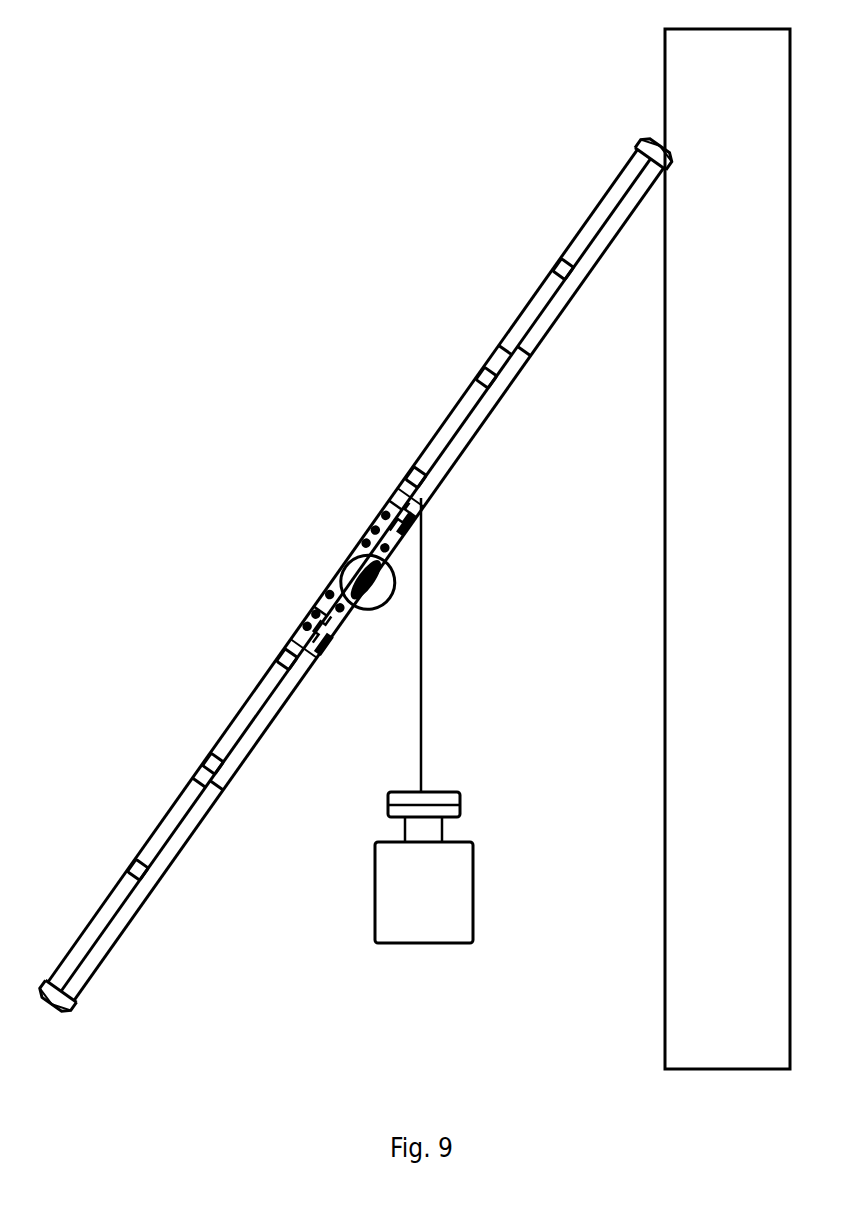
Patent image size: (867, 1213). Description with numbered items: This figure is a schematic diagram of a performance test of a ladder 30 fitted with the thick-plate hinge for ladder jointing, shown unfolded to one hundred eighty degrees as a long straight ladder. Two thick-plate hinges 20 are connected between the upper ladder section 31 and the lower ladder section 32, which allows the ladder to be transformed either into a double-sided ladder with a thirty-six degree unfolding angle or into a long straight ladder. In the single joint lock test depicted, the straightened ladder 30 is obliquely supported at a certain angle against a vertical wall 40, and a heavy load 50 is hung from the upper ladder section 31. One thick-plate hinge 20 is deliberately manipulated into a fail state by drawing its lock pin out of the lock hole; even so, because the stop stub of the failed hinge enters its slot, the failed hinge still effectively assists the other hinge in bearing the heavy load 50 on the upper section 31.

The thick-plate hinge 20 is at (352, 580).
The ladder 30 is at (485, 280).
The upper ladder section 31 is at (462, 408).
The lower ladder section 32 is at (232, 738).
The vertical wall 40 is at (677, 485).
The heavy load 50 is at (392, 918).